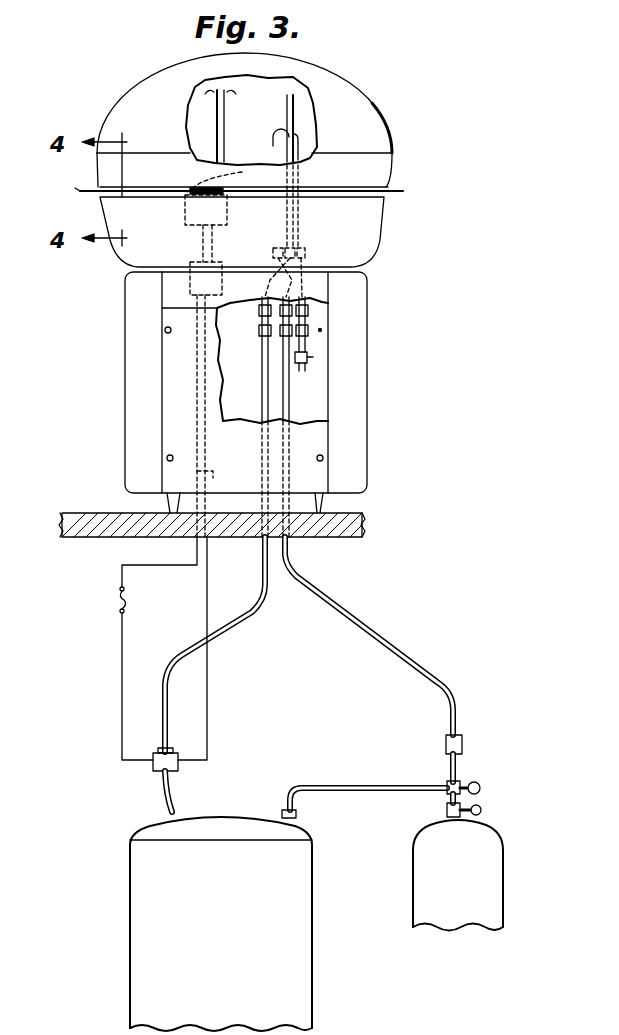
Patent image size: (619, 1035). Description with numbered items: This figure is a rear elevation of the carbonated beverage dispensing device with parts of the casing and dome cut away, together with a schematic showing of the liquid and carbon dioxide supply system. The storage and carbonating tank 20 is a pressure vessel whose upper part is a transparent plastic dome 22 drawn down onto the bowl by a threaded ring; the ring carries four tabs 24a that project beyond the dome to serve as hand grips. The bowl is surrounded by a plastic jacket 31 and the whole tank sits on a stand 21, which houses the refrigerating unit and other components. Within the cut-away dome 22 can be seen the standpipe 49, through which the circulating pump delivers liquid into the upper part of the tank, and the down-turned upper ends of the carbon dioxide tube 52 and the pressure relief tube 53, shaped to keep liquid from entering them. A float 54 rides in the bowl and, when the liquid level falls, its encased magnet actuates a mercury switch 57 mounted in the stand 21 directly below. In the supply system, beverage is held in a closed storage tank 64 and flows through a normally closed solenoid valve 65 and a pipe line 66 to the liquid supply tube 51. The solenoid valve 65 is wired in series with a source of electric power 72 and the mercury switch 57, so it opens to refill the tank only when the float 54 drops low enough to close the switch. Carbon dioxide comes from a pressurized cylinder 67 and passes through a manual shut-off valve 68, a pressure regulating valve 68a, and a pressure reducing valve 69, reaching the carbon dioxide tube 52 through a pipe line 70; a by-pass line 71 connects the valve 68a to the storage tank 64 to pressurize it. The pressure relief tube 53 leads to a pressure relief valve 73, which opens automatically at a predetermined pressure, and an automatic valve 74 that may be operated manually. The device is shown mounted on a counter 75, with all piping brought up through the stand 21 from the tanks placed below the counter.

The storage and carbonating tank 20 is at (398, 164).
The stand 21 is at (352, 386).
The dome 22 is at (345, 112).
The tabs 24a is at (86, 191).
The jacket 31 is at (365, 228).
The standpipe 49 is at (222, 122).
The liquid supply tube 51 is at (280, 248).
The carbon dioxide tube 52 is at (274, 130).
The pressure relief tube 53 is at (291, 107).
The float 54 is at (227, 179).
The mercury switch 57 is at (190, 276).
The storage tank 64 is at (150, 925).
The solenoid valve 65 is at (157, 763).
The pipe line 66 is at (268, 585).
The pressurized cylinder 67 is at (493, 860).
The manual shut-off valve 68 is at (482, 811).
The pressure regulating valve 68a is at (480, 784).
The pressure reducing valve 69 is at (463, 742).
The pipe line 70 is at (425, 673).
The by-pass line 71 is at (367, 786).
The source of electric power 72 is at (118, 601).
The pressure relief valve 73 is at (305, 307).
The automatic valve 74 is at (305, 356).
The counter 75 is at (349, 515).